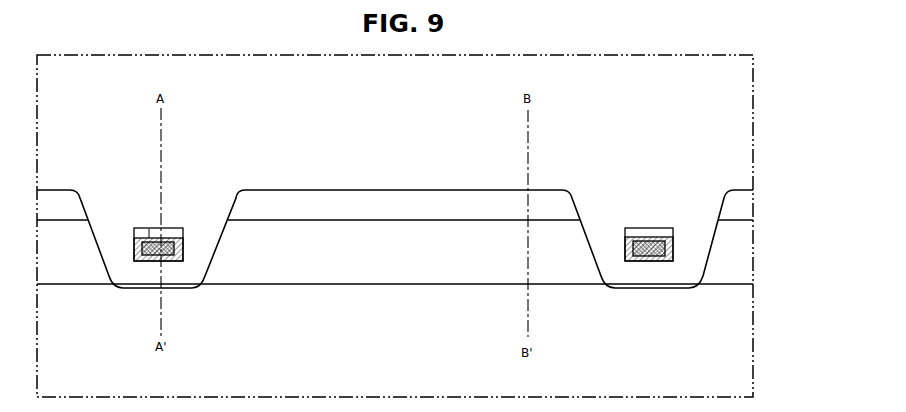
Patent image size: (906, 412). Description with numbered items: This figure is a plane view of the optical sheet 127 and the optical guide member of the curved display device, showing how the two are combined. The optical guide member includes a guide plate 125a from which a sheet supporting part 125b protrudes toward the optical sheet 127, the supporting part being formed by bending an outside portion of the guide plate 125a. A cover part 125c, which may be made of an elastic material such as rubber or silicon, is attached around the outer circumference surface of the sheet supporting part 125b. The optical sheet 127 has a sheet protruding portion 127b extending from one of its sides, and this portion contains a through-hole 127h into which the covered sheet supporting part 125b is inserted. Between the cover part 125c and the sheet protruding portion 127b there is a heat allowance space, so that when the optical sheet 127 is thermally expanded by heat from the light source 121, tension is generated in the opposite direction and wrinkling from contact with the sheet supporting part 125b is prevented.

The optical sheet 127 is at (718, 113).
The light source 121 is at (733, 203).
The guide plate 125a is at (733, 248).
The sheet supporting part 125b is at (171, 256).
The cover part 125c is at (142, 259).
The through-hole 127h is at (182, 229).
The sheet protruding portion 127b is at (205, 242).